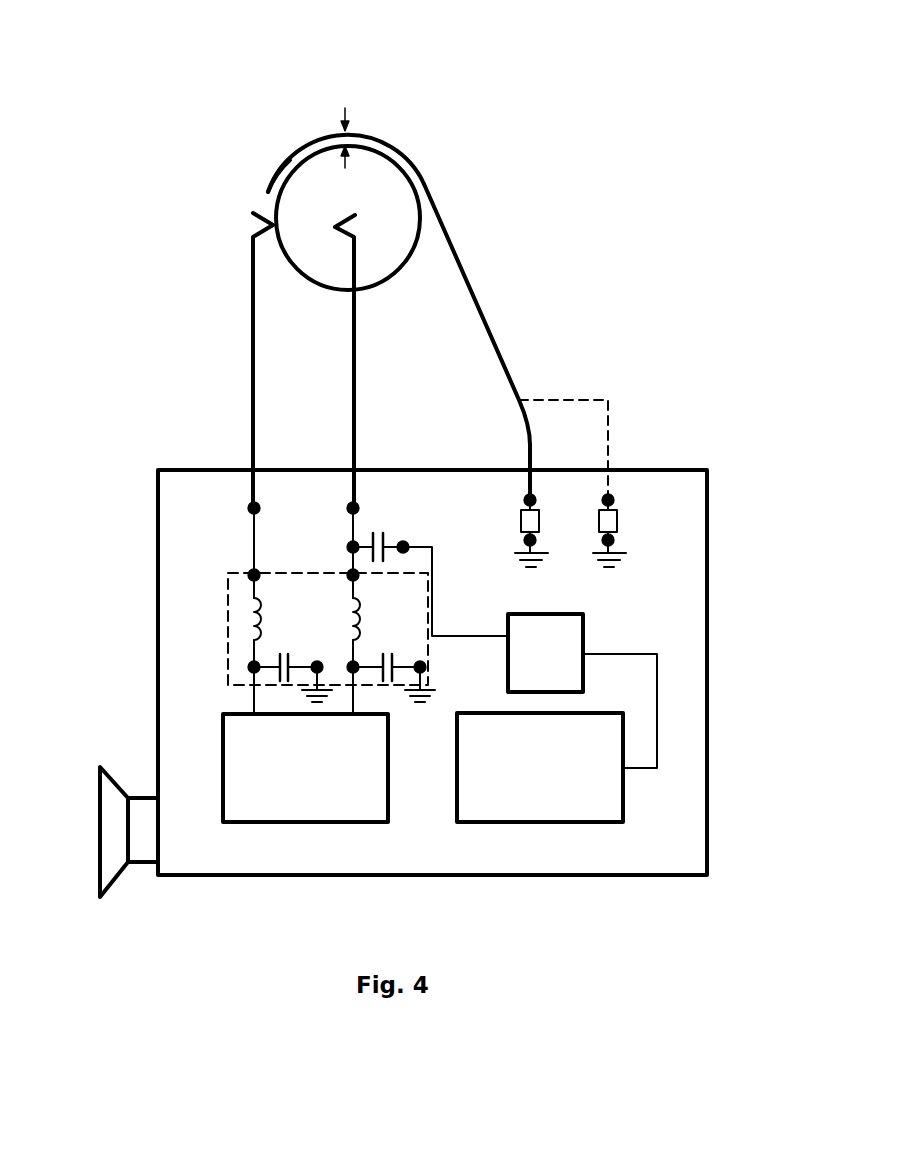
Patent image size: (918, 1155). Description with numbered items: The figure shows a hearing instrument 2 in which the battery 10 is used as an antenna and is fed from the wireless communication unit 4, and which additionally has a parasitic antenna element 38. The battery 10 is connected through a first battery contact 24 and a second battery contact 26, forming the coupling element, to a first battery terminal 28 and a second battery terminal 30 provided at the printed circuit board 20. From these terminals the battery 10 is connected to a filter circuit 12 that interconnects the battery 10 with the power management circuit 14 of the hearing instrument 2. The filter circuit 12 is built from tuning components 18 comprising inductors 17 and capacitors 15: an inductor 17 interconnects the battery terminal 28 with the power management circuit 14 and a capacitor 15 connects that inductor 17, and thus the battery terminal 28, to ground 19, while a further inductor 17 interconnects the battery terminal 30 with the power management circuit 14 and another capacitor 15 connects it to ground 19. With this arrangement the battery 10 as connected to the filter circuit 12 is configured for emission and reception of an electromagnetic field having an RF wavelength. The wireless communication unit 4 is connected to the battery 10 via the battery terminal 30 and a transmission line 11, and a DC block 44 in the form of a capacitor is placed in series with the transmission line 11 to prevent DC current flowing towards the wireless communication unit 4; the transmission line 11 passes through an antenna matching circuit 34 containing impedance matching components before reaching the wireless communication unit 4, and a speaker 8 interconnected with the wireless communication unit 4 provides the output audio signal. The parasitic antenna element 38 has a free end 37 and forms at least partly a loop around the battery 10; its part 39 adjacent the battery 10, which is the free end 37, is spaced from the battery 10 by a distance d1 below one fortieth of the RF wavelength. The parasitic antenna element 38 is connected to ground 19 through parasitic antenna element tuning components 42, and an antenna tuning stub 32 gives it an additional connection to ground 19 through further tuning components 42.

The hearing instrument 2 is at (76, 127).
The wireless communication unit 4 is at (623, 783).
The speaker 8 is at (150, 866).
The battery 10 is at (275, 208).
The transmission line 11 is at (434, 571).
The filter circuit 12 is at (228, 638).
The power management circuit 14 is at (223, 783).
The capacitor 15 is at (283, 641).
The inductor 17 is at (242, 622).
The tuning components 18 is at (372, 648).
The ground 19 is at (290, 697).
The printed circuit board 20 is at (707, 826).
The first battery contact 24 is at (253, 370).
The second battery contact 26 is at (354, 372).
The first battery terminal 28 is at (248, 509).
The second battery terminal 30 is at (357, 506).
The antenna tuning stub 32 is at (613, 437).
The antenna matching circuit 34 is at (583, 630).
The free end 37 is at (270, 178).
The parasitic antenna element 38 is at (478, 308).
The part of the parasitic antenna element 39 is at (305, 133).
The parasitic antenna element tuning components 42 is at (640, 522).
The DC block 44 is at (386, 536).
The distance d1 is at (360, 120).